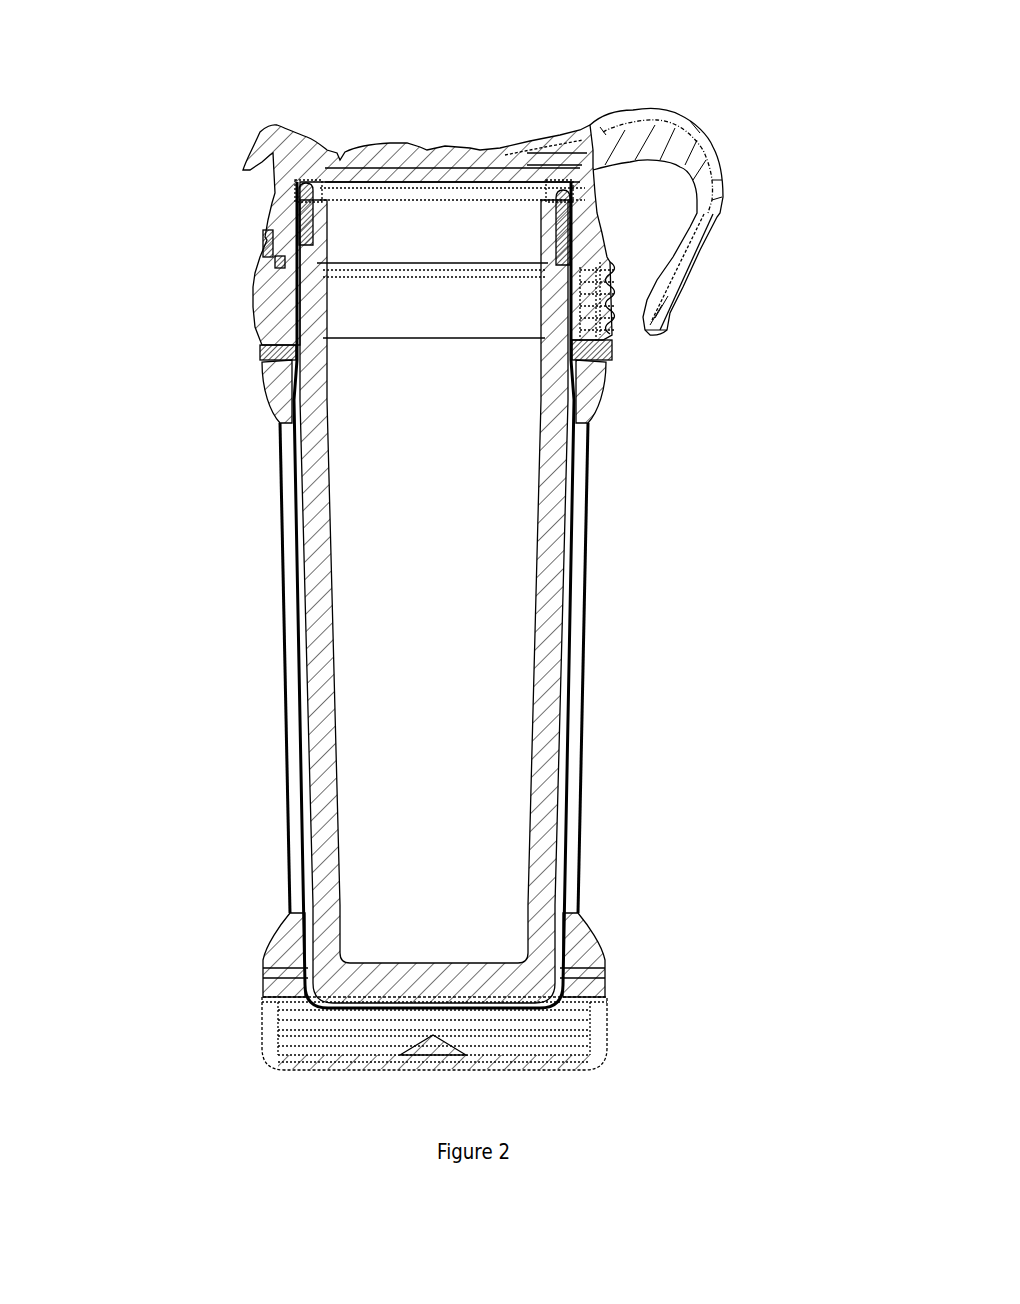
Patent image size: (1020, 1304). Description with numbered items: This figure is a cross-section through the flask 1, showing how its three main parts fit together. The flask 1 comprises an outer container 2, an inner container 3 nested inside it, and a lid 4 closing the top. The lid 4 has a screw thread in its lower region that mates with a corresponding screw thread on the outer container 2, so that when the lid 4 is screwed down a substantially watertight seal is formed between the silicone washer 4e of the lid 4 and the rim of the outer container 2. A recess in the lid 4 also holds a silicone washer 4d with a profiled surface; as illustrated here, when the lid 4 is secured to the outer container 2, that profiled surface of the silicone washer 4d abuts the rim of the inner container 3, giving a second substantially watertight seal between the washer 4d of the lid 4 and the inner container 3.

The flask 1 is at (818, 78).
The outer container 2 is at (289, 720).
The inner container 3 is at (327, 782).
The lid 4 is at (283, 210).
The silicone washer 4d is at (309, 198).
The silicone washer 4e is at (578, 248).